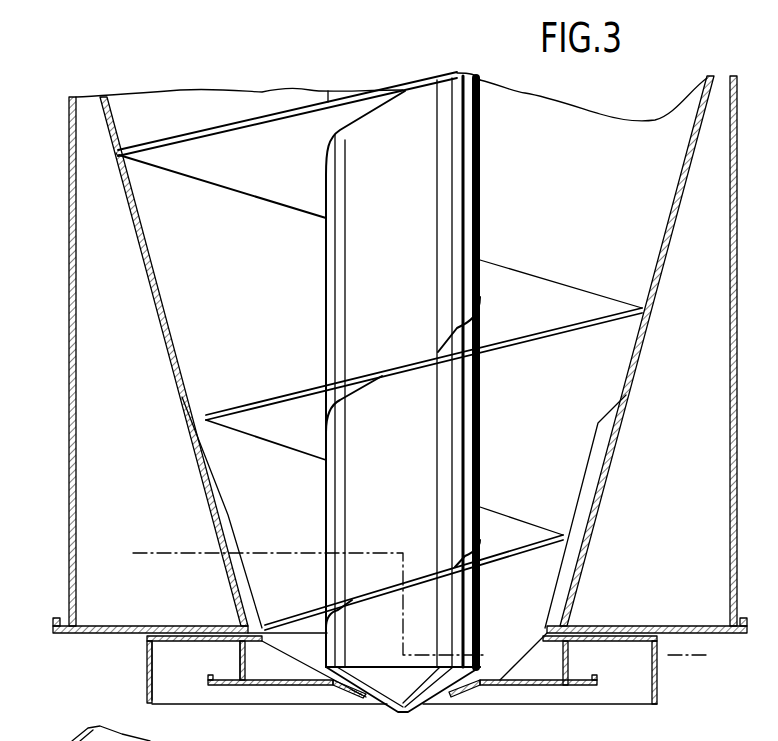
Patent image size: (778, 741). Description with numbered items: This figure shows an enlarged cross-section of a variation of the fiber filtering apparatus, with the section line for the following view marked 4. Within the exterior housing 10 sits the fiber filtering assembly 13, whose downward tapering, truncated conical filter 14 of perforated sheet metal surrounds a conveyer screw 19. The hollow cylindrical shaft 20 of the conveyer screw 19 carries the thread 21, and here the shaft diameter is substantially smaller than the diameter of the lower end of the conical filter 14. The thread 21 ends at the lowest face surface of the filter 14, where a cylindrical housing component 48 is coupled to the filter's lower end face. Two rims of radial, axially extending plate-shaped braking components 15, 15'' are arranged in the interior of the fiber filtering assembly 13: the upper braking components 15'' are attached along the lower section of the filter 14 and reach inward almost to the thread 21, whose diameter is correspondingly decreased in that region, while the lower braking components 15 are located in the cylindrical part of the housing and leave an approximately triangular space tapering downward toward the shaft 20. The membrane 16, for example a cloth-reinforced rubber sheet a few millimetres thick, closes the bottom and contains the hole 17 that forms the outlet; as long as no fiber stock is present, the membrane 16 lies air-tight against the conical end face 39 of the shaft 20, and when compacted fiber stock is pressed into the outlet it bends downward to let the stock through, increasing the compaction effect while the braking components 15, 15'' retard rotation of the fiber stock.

The exterior housing 10 is at (61, 386).
The fiber filtering assembly 13 is at (496, 694).
The filter 14 is at (642, 363).
The braking components 15 is at (402, 688).
The upper braking components 15'' is at (404, 511).
The membrane 16 is at (318, 688).
The hole 17 is at (360, 694).
The conveyer screw 19 is at (186, 124).
The shaft 20 is at (342, 529).
The thread 21 is at (526, 325).
The conical end face 39 is at (428, 705).
The cylindrical housing component 48 is at (240, 658).
The section line IV-IV 4 is at (145, 513).